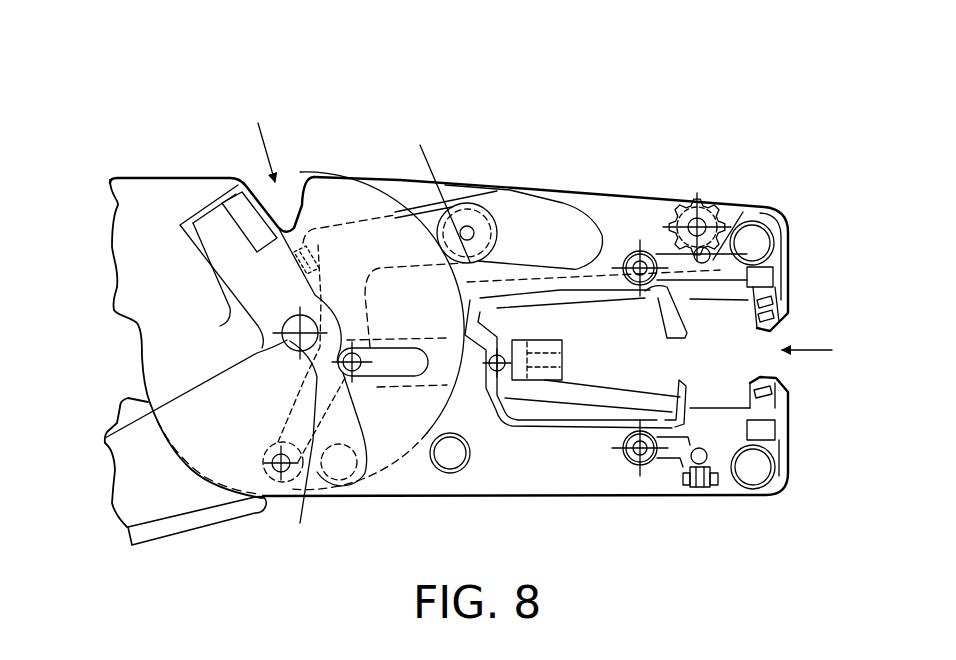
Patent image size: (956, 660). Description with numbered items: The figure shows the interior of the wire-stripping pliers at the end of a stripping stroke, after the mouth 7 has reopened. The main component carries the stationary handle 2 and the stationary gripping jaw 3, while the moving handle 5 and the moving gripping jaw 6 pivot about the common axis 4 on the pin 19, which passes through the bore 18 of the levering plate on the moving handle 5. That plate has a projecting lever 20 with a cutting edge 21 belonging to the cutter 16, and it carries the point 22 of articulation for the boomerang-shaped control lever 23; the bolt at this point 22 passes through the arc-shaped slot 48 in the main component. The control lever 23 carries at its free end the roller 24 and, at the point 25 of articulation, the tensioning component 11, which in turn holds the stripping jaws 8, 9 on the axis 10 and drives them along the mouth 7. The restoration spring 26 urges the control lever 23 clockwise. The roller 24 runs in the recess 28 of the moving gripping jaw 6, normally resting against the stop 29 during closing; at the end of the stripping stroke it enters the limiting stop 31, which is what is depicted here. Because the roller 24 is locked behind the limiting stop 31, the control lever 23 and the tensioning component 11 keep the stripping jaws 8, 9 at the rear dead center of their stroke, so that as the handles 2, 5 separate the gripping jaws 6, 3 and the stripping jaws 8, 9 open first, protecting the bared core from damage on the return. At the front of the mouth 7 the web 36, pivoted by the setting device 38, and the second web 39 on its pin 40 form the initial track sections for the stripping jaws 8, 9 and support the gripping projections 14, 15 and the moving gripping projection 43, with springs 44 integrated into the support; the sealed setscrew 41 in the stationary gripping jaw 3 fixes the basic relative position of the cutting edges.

The stationary handle 2 is at (133, 190).
The stationary gripping jaw 3 is at (518, 482).
The common axis 4 is at (322, 399).
The moving handle 5 is at (220, 513).
The moving gripping jaw 6 is at (637, 217).
The mouth 7 is at (816, 350).
The stripping jaw 8 is at (667, 338).
The stripping jaw 9 is at (567, 410).
The axis 10 is at (499, 355).
The tensioning component 11 is at (437, 350).
The gripping projection 14 is at (773, 285).
The gripping projection 15 is at (777, 423).
The cutter 16 is at (258, 139).
The bore 18 is at (296, 318).
The pin 19 is at (258, 353).
The projecting lever 20 is at (223, 225).
The cutting edge 21 is at (233, 203).
The point of articulation 22 is at (275, 456).
The control lever 23 is at (358, 242).
The roller 24 is at (452, 200).
The point of articulation 25 is at (358, 374).
The restoration spring 26 is at (306, 181).
The recess 28 is at (487, 195).
The stop 29 is at (570, 308).
The limiting stop 31 is at (446, 189).
The web 36 is at (743, 212).
The setting device 38 is at (698, 203).
The web 39 is at (677, 443).
The pin 40 is at (640, 470).
The setscrew 41 is at (703, 488).
The moving gripping projection 43 is at (772, 397).
The springs 44 is at (777, 314).
The slot 48 is at (348, 480).